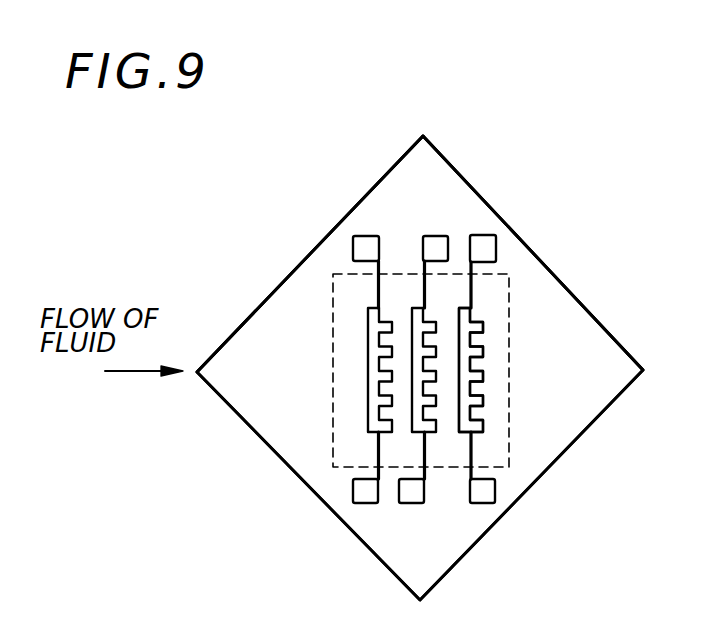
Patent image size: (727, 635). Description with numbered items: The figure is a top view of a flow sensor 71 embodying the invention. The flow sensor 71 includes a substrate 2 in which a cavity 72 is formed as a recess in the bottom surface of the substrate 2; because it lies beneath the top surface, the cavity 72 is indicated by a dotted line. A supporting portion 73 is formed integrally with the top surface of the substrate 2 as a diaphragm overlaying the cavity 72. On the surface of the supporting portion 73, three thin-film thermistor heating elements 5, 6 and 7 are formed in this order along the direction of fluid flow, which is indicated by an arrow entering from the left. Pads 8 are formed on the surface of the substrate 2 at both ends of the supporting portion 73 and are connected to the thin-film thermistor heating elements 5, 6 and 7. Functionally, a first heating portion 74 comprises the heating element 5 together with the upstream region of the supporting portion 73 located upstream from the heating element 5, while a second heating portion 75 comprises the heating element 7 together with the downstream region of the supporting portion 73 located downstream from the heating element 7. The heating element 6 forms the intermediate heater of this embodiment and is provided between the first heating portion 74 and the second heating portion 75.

The substrate 2 is at (605, 362).
The thin-film thermistor heating element 5 is at (368, 340).
The thin-film thermistor heating element 6 is at (413, 388).
The thin-film thermistor heating element 7 is at (483, 402).
The pads 8 is at (417, 503).
The flow sensor 71 is at (562, 217).
The cavity 72 is at (510, 318).
The supporting portion 73 is at (493, 360).
The first heating portion 74 is at (318, 220).
The second heating portion 75 is at (510, 218).